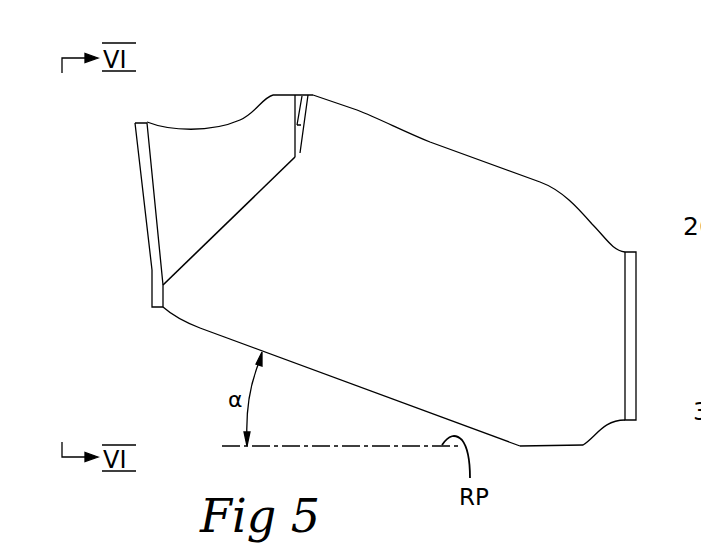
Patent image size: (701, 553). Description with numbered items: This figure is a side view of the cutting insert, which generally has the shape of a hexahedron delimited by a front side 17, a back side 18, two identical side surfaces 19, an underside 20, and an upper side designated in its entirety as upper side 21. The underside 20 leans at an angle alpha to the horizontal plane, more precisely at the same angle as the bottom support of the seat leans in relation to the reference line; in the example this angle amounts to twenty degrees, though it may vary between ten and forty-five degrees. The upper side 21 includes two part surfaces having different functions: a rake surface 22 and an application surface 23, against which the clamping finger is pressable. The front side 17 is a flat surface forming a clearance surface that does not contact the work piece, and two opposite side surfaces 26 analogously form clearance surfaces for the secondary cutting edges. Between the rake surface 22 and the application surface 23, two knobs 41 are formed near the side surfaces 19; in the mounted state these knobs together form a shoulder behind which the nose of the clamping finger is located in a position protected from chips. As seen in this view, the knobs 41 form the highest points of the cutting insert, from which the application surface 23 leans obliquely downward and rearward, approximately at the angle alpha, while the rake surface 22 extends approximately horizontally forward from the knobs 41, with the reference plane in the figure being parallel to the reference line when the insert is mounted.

The front side 17 is at (125, 215).
The back side 18 is at (640, 331).
The side surface 19 is at (402, 276).
The underside 20 is at (350, 386).
The upper side 21 is at (357, 95).
The rake surface 22 is at (217, 98).
The application surface 23 is at (460, 147).
The side surface 26 is at (212, 186).
The knob 41 is at (302, 92).